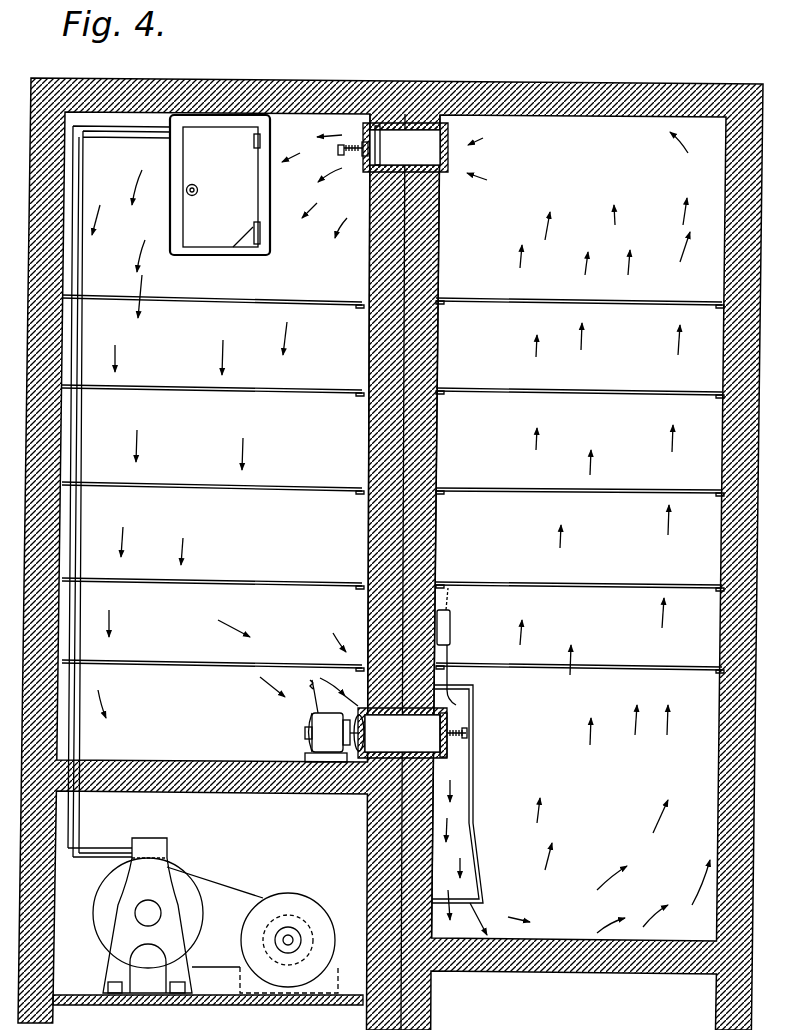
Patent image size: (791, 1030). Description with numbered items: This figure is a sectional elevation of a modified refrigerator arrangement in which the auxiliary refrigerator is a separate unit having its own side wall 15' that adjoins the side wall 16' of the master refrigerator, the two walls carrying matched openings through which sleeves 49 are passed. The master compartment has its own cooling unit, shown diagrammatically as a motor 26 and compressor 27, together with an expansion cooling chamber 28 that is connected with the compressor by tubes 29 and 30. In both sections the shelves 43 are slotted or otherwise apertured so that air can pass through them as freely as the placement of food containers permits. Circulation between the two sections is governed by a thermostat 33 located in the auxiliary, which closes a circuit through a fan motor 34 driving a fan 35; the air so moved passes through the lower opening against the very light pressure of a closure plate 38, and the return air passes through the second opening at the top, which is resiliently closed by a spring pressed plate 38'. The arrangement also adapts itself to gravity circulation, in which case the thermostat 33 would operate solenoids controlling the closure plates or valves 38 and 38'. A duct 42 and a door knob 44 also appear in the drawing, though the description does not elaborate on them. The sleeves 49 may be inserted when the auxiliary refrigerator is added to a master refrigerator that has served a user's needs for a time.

The side wall 15' is at (459, 526).
The side wall 16' is at (348, 438).
The motor 26 is at (292, 905).
The compressor 27 is at (160, 849).
The expansion cooling chamber 28 is at (213, 256).
The tube 29 is at (75, 266).
The tube 30 is at (84, 244).
The thermostat 33 is at (452, 632).
The motor 34 is at (318, 724).
The fan 35 is at (368, 726).
The closure plate 38 is at (475, 729).
The spring pressed plate 38' is at (352, 173).
The duct 42 is at (464, 770).
The shelves 43 is at (224, 581).
The door knob 44 is at (206, 180).
The sleeves 49 is at (448, 160).